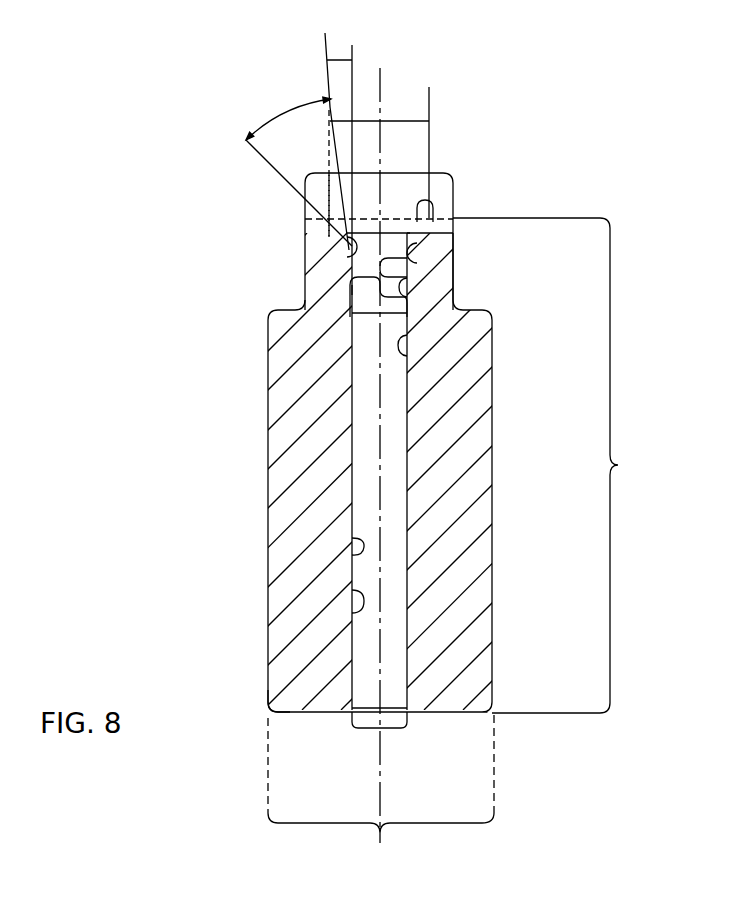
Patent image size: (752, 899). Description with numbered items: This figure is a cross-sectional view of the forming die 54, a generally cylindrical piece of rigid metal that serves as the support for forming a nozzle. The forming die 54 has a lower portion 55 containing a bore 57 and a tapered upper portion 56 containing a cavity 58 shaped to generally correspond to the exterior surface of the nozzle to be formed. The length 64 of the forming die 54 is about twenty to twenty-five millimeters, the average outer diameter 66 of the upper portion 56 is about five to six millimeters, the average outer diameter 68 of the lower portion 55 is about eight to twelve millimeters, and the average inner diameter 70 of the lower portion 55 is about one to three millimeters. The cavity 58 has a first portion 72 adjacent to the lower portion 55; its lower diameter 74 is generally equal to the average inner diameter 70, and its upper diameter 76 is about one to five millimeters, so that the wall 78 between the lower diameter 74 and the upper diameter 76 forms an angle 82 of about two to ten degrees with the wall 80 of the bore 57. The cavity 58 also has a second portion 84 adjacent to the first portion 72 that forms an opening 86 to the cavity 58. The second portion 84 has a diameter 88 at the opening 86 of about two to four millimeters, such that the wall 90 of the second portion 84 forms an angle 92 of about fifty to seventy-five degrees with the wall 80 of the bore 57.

The forming die 54 is at (267, 498).
The lower portion 55 is at (268, 678).
The upper portion 56 is at (455, 267).
The bore 57 is at (353, 613).
The cavity 58 is at (410, 248).
The length 64 is at (618, 465).
The average outer diameter 66 is at (379, 173).
The average outer diameter 68 is at (380, 833).
The average inner diameter 70 is at (381, 732).
The first portion 72 is at (407, 350).
The lower diameter 74 is at (352, 290).
The upper diameter 76 is at (407, 273).
The wall 78 is at (413, 273).
The wall 80 is at (350, 552).
The angle 82 is at (338, 60).
The second portion 84 is at (329, 210).
The opening 86 is at (420, 203).
The diameter 88 is at (381, 120).
The wall 90 is at (352, 238).
The angle 92 is at (288, 114).